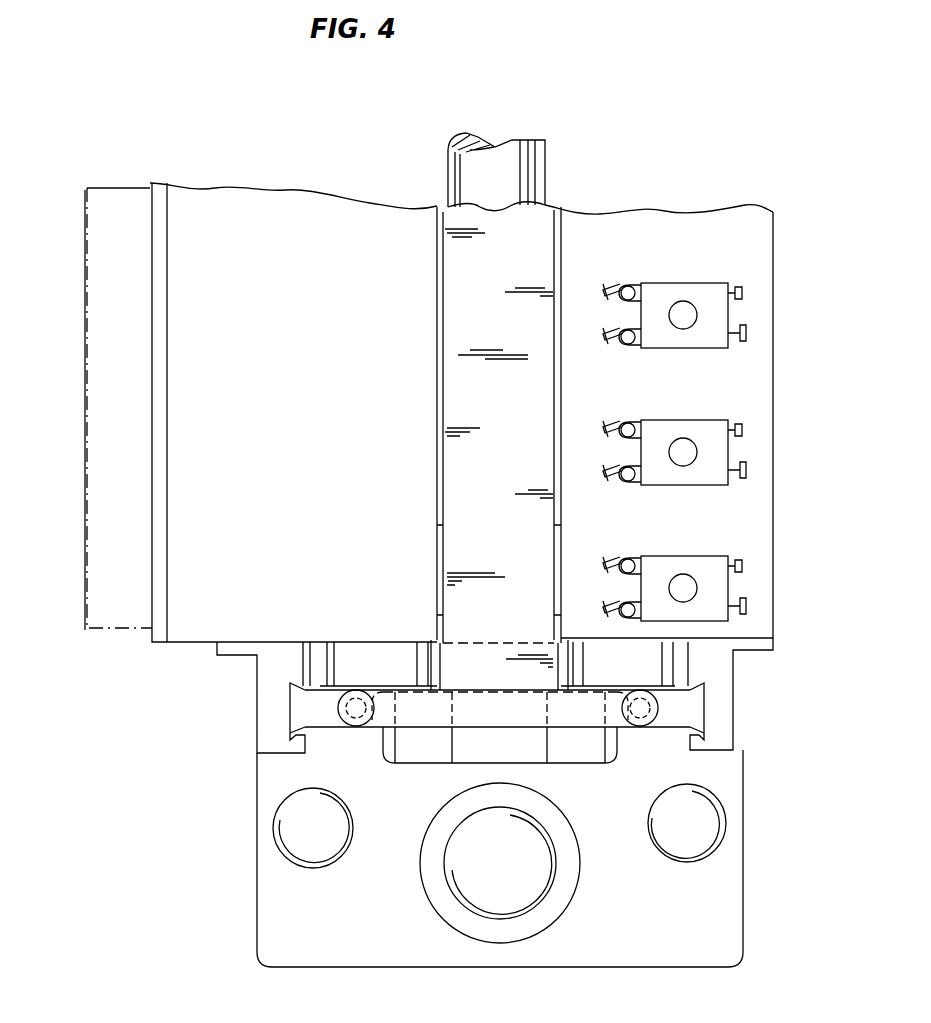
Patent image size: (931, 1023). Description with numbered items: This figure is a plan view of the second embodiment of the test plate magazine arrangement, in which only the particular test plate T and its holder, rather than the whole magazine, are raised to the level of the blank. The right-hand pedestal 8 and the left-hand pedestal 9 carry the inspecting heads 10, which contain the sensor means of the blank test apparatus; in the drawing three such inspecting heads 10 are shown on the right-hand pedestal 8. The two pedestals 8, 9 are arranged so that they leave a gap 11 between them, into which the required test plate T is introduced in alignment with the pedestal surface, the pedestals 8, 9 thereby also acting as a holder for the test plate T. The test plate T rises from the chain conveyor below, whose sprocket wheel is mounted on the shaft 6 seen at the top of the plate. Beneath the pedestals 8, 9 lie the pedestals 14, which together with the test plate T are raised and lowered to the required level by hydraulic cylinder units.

The left-hand pedestal 9 is at (261, 412).
The test plate T is at (451, 226).
The shaft 6 is at (522, 150).
The gap 11 is at (559, 210).
The right-hand pedestal 8 is at (613, 240).
The inspecting heads 10 is at (713, 338).
The pedestals 14 is at (468, 712).